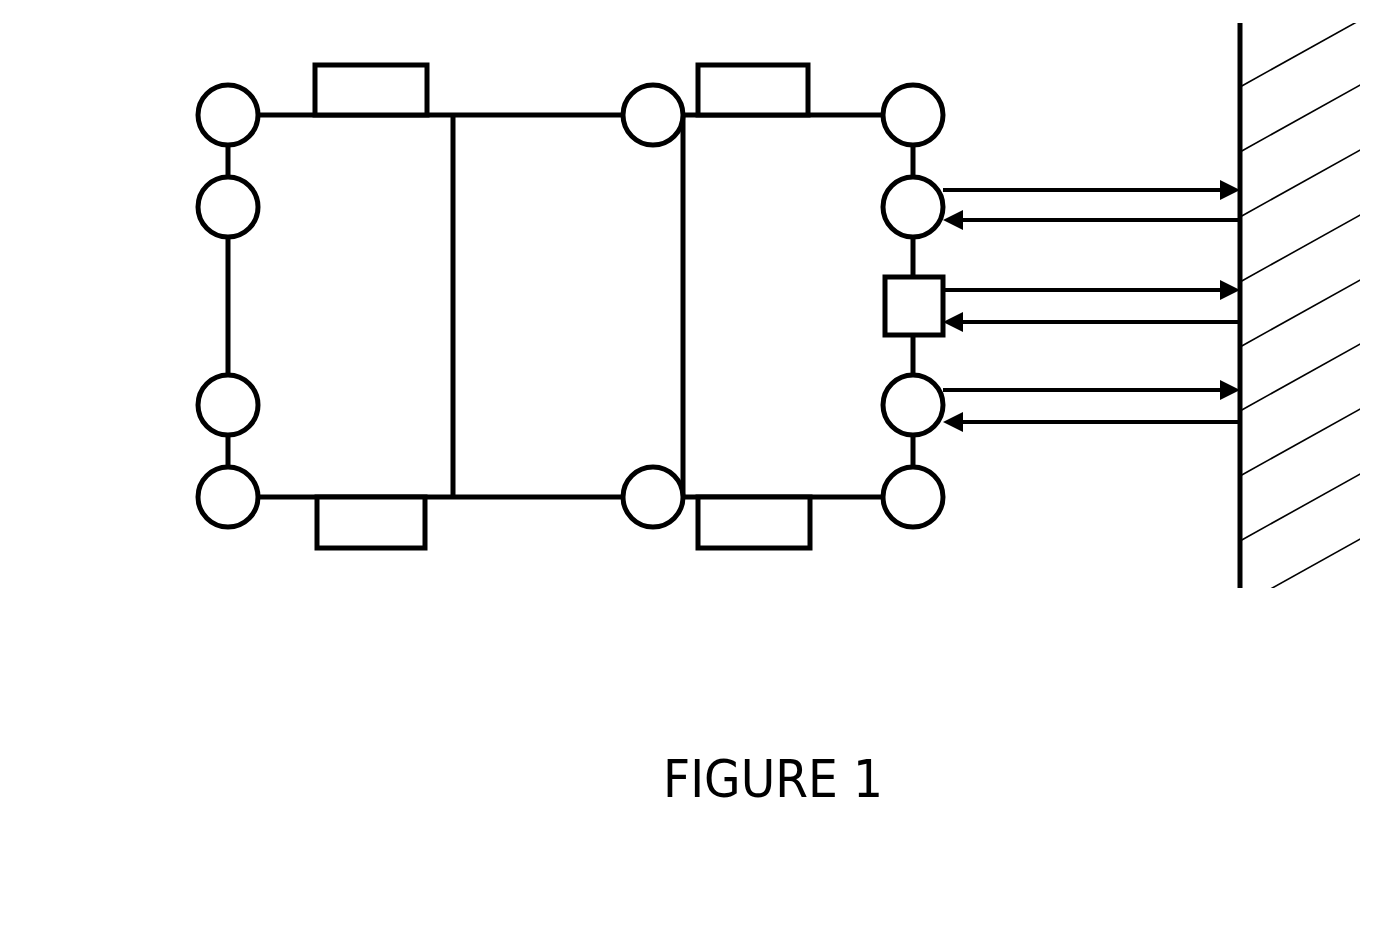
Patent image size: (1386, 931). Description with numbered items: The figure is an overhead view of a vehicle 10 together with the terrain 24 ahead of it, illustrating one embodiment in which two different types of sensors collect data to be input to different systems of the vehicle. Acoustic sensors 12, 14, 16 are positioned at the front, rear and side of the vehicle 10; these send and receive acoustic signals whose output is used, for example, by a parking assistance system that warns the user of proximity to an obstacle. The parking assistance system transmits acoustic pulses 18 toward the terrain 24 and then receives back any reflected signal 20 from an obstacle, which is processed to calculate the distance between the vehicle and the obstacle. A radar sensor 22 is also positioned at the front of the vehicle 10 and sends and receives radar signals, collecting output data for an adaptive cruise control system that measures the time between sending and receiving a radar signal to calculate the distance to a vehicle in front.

The vehicle 10 is at (540, 617).
The acoustic sensor 12 is at (930, 180).
The acoustic sensor 14 is at (211, 430).
The acoustic sensor 16 is at (647, 526).
The acoustic pulse 18 is at (1033, 190).
The reflected signal 20 is at (1117, 220).
The radar sensor 22 is at (930, 337).
The terrain 24 is at (1315, 545).